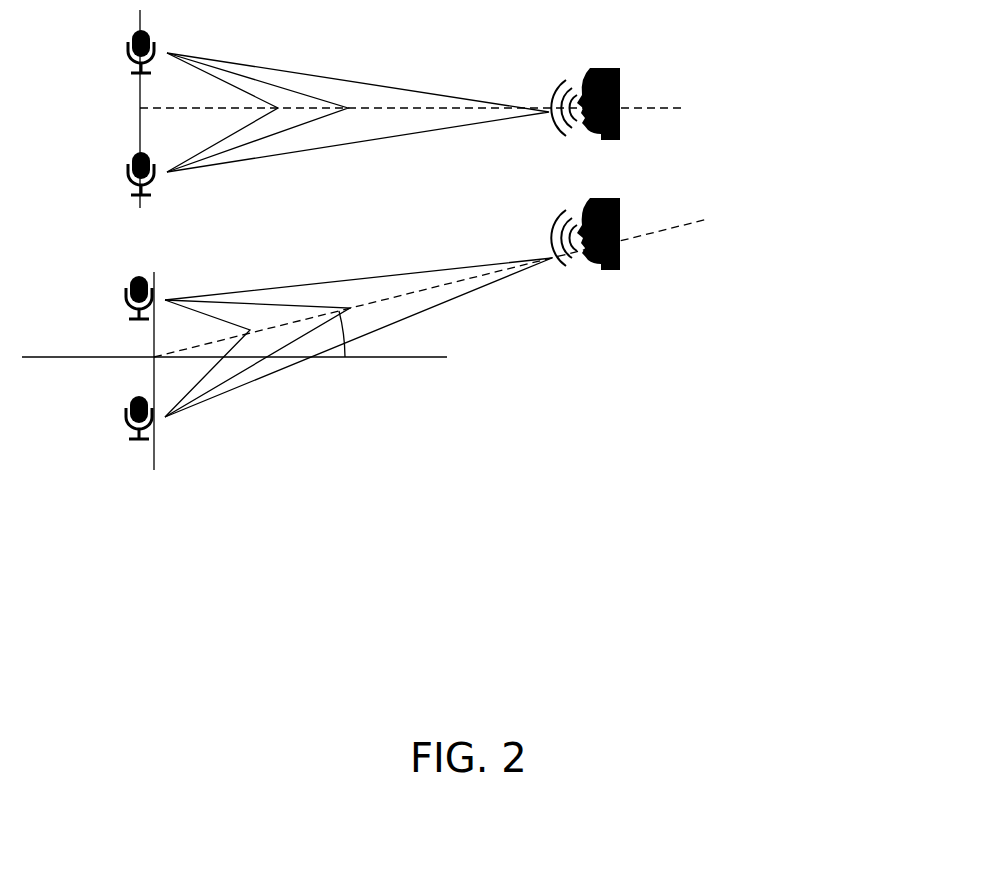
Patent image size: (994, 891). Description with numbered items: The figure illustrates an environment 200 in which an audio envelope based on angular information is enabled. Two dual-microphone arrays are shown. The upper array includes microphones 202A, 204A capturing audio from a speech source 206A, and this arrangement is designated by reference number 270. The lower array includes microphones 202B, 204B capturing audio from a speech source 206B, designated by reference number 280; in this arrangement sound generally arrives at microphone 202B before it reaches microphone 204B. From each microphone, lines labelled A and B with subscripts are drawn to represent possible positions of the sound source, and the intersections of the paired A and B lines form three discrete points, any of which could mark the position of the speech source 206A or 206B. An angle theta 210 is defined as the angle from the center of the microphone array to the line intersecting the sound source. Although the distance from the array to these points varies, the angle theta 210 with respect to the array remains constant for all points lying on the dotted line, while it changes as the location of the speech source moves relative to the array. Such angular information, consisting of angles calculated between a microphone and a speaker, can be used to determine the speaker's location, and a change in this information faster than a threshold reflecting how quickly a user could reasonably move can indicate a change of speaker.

The environment 200 is at (431, 365).
The microphone 202A is at (102, 60).
The microphone 204A is at (102, 178).
The speech source 206A is at (607, 67).
The reference number for first microphone array configuration 270 is at (708, 92).
The microphone 202B is at (101, 307).
The microphone 204B is at (99, 425).
The speech source 206B is at (612, 197).
The reference number for second microphone array configuration 280 is at (712, 258).
The angle theta 210 is at (357, 340).